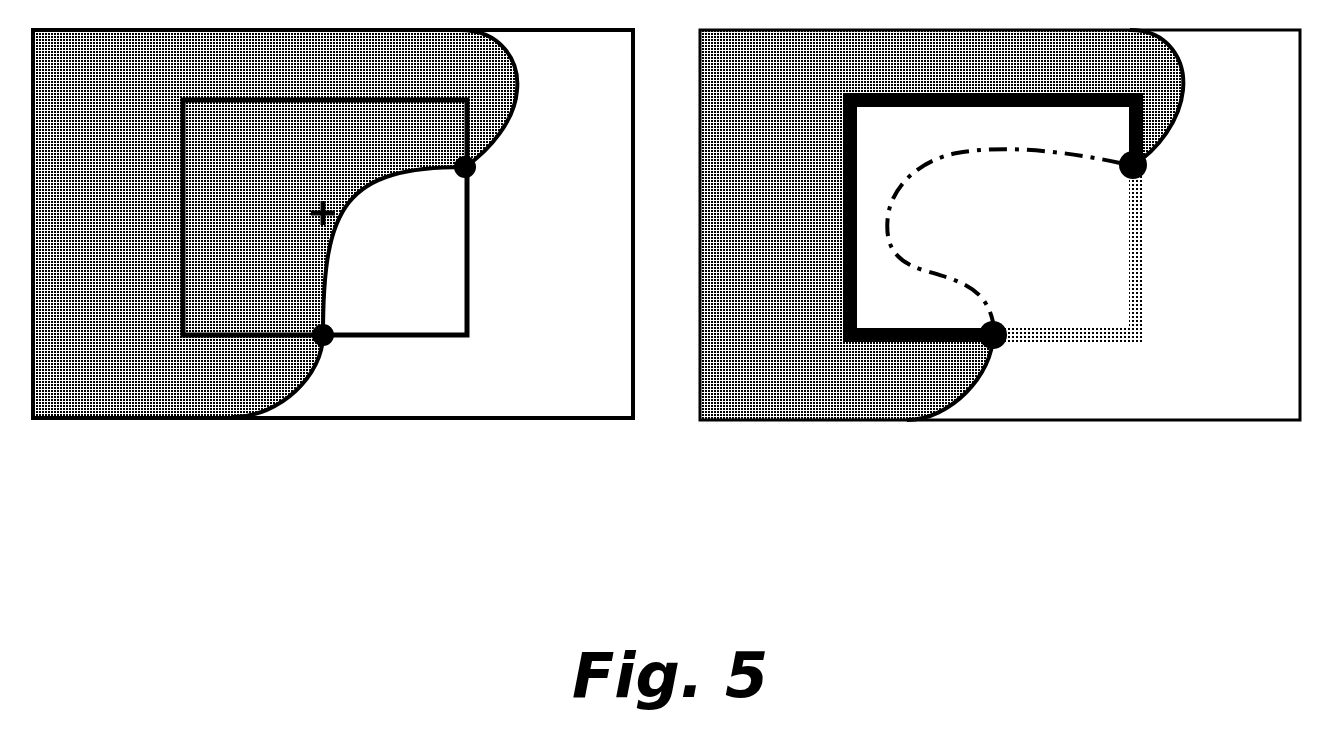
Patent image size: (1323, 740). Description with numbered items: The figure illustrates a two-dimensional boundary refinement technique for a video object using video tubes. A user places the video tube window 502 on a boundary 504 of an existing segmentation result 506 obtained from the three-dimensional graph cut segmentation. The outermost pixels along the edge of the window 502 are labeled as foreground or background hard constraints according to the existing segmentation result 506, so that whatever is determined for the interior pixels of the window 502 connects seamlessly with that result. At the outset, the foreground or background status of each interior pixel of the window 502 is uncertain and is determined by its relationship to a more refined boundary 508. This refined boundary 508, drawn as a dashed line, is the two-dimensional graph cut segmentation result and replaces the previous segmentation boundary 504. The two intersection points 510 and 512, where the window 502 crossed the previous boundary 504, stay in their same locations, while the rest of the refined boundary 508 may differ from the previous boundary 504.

The video tube window 502 is at (427, 338).
The boundary 504 is at (330, 273).
The existing segmentation result 506 is at (140, 422).
The refined boundary 508 is at (903, 190).
The intersection point 510 is at (470, 175).
The intersection point 512 is at (328, 347).